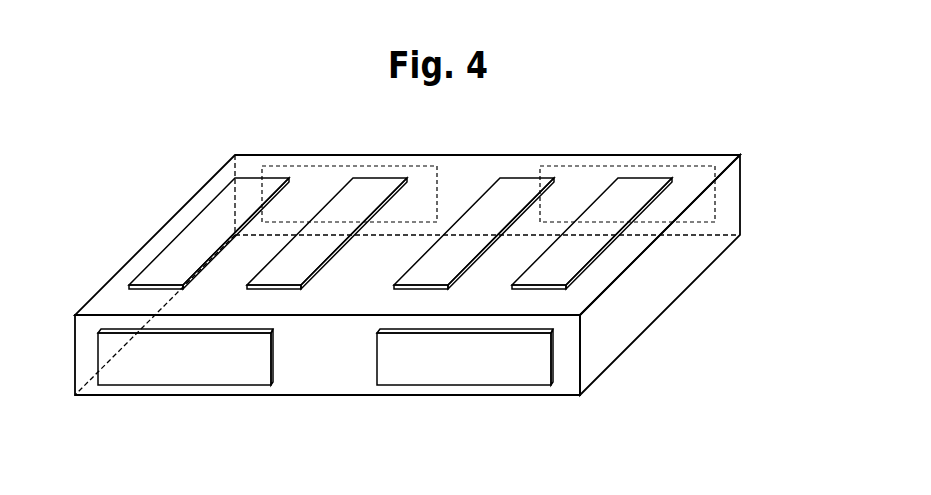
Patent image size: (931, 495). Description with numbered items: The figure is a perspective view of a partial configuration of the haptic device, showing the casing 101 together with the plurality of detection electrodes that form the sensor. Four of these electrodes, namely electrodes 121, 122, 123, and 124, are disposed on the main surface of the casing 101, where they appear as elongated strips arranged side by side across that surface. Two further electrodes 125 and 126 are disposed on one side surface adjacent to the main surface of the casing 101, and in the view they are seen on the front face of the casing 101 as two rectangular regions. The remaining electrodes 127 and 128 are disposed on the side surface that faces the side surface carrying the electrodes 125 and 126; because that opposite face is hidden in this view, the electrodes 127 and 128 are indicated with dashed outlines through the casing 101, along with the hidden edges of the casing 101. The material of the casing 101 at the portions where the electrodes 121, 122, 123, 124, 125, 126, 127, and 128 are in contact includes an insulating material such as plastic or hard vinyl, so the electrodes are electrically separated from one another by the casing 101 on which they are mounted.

The casing 101 is at (741, 209).
The electrode 121 is at (252, 178).
The electrode 122 is at (377, 178).
The electrode 123 is at (520, 178).
The electrode 124 is at (645, 178).
The electrode 125 is at (180, 385).
The electrode 126 is at (468, 385).
The electrode 127 is at (315, 166).
The electrode 128 is at (597, 166).